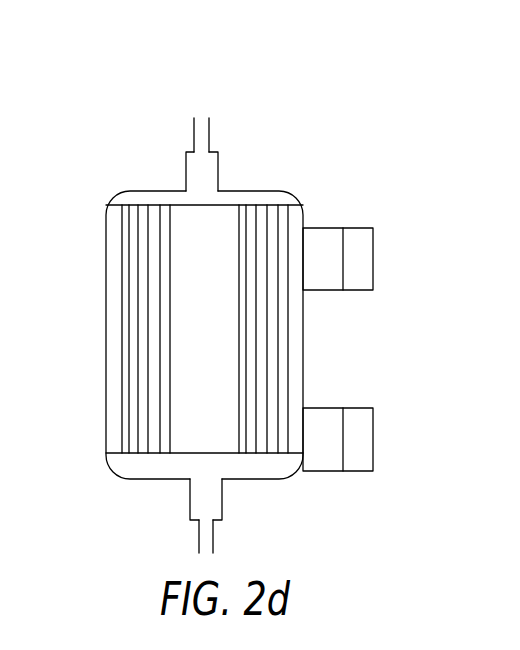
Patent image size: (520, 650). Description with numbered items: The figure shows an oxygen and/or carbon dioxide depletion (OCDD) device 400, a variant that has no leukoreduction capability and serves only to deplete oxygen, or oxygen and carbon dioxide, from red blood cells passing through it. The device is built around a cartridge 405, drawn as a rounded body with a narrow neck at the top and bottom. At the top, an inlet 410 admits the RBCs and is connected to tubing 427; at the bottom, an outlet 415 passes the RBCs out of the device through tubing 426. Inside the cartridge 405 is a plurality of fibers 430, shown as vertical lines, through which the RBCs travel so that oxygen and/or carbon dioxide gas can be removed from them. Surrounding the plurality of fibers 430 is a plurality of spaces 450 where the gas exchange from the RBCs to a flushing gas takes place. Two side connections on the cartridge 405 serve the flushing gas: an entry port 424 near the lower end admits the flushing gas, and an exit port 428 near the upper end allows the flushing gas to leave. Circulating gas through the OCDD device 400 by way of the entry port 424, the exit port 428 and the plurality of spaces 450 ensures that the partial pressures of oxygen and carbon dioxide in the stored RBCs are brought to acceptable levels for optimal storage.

The OCDD device 400 is at (228, 127).
The cartridge 405 is at (137, 199).
The inlet 410 is at (195, 162).
The tubing 427 is at (193, 121).
The outlet 415 is at (203, 521).
The tubing 426 is at (214, 537).
The plurality of spaces 450 is at (150, 337).
The plurality of fibers 430 is at (140, 386).
The exit port 428 is at (352, 256).
The entry port 424 is at (360, 428).